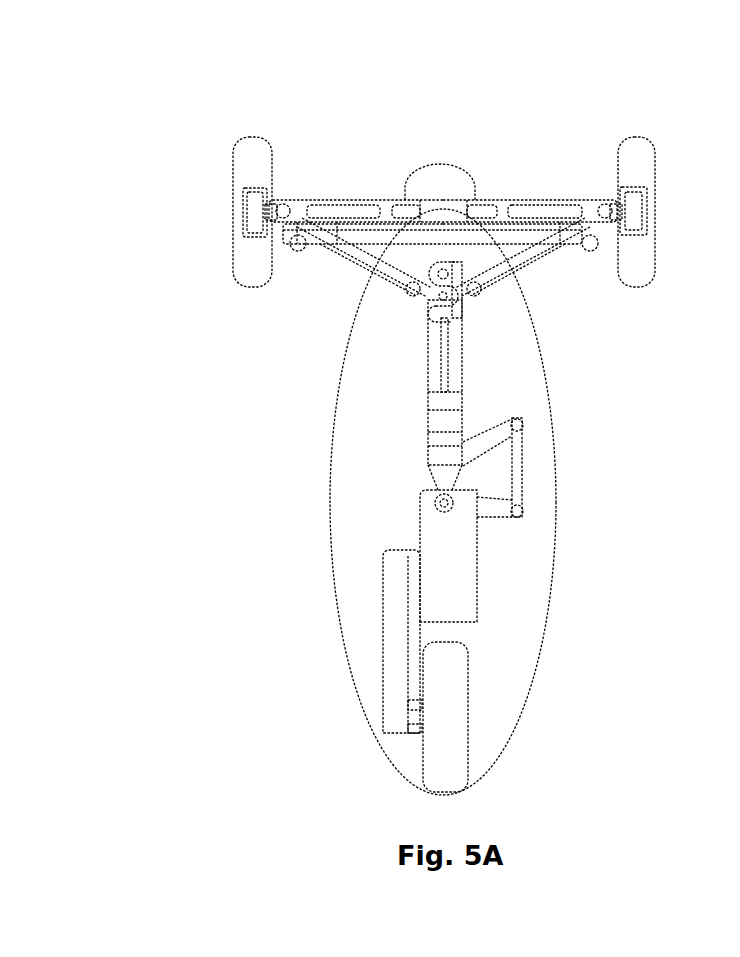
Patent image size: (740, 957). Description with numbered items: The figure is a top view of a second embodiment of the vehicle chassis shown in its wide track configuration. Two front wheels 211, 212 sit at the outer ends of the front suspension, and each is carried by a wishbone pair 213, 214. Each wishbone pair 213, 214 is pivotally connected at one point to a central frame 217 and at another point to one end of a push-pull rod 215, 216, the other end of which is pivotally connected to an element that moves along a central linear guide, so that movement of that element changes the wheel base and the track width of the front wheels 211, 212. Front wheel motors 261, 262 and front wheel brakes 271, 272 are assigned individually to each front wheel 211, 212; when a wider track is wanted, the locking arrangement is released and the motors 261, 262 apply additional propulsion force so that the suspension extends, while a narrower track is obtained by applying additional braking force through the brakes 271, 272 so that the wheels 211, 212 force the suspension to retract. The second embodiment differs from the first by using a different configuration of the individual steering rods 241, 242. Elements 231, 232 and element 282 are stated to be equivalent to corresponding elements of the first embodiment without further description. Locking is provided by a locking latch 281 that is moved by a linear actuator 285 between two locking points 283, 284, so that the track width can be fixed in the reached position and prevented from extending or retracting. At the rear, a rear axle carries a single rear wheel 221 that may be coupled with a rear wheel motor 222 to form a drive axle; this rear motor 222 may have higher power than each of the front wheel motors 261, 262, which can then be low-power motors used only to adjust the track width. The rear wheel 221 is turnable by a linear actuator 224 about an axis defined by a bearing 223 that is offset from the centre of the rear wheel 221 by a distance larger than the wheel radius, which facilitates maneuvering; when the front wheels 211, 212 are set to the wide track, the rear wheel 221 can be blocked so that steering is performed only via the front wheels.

The front wheel 211 is at (248, 278).
The front wheel 212 is at (735, 119).
The wishbone pair 213 is at (347, 200).
The wishbone pair 214 is at (553, 202).
The push-pull rod 215 is at (378, 258).
The push-pull rod 216 is at (510, 262).
The central frame 217 is at (443, 203).
The rear wheel 221 is at (450, 660).
The rear wheel motor 222 is at (463, 542).
The bearing 223 is at (443, 505).
The linear actuator 224 is at (515, 450).
The chassis element 231 is at (282, 212).
The chassis element 232 is at (610, 210).
The individual steering rod 241 is at (335, 242).
The individual steering rod 242 is at (555, 242).
The front wheel motor 261 is at (240, 253).
The front wheel motor 262 is at (735, 207).
The front wheel brake 271 is at (242, 188).
The front wheel brake 272 is at (735, 248).
The locking latch 281 is at (438, 312).
The chassis element 282 is at (440, 292).
The locking point 283 is at (445, 273).
The locking point 284 is at (442, 402).
The linear actuator 285 is at (445, 338).